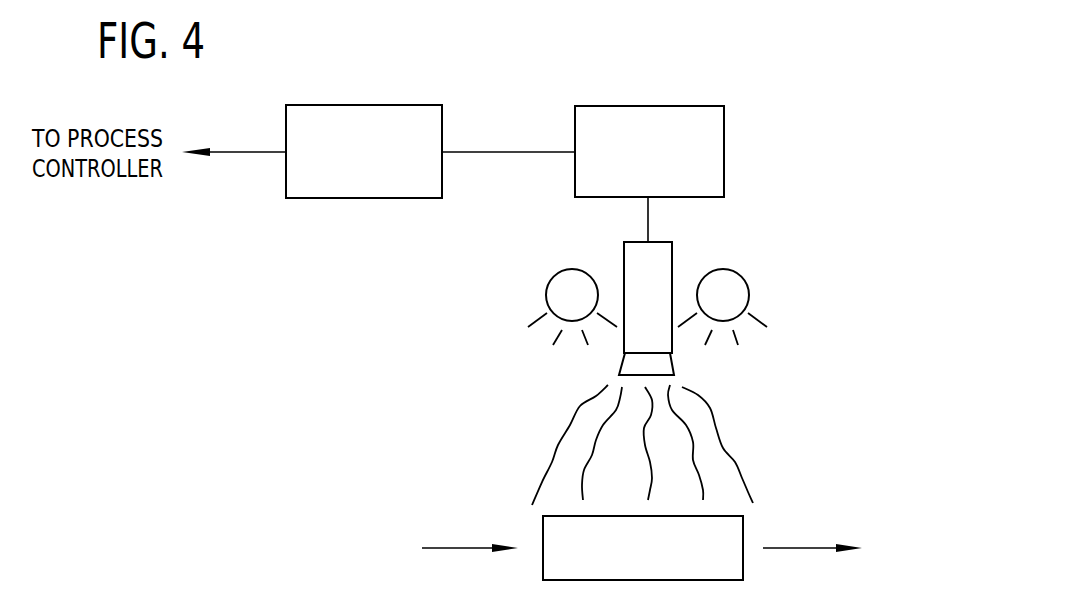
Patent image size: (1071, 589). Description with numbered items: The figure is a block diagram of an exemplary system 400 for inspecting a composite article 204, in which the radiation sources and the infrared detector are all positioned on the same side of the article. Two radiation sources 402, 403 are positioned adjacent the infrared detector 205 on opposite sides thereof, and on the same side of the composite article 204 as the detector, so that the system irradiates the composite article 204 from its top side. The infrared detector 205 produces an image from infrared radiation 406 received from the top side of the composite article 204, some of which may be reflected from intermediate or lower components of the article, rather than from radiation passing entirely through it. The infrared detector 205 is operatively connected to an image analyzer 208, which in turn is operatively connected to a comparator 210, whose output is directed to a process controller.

The system 400 is at (795, 150).
The comparator 210 is at (362, 198).
The image analyzer 208 is at (724, 152).
The infrared detector 205 is at (672, 258).
The radiation source 402 is at (542, 296).
The radiation source 403 is at (749, 290).
The infrared radiation 406 is at (717, 437).
The composite article 204 is at (745, 530).